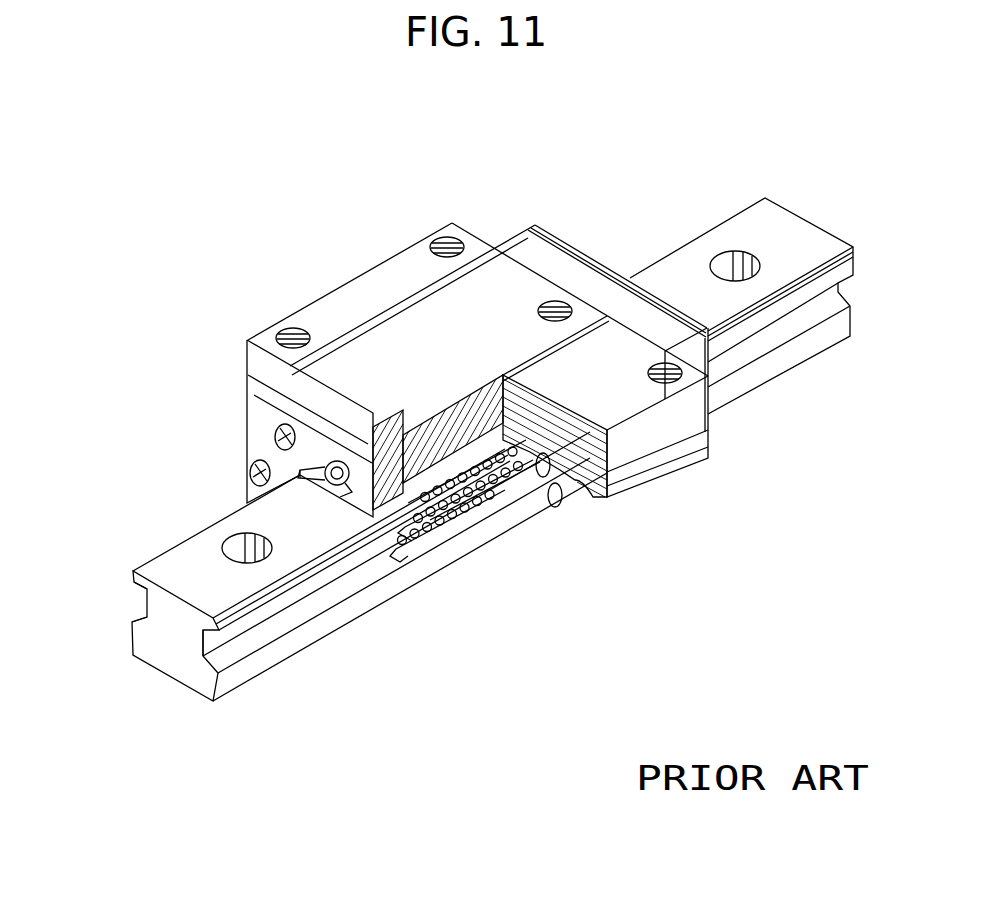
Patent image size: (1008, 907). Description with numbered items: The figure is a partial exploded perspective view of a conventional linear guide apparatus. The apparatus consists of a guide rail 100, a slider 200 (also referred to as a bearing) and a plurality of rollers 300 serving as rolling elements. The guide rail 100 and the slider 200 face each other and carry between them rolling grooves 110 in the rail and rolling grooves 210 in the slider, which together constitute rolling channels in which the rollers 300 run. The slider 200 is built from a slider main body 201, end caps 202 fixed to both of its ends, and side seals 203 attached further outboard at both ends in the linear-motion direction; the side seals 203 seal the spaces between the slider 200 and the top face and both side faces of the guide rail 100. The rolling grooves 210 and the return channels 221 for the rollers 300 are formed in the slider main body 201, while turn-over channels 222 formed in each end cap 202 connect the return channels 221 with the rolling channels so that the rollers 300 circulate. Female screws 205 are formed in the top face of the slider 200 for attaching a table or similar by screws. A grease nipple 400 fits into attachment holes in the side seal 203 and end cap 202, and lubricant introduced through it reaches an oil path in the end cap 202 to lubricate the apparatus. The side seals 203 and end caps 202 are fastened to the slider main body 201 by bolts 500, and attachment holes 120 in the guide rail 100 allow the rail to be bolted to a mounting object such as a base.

The guide rail 100 is at (307, 637).
The rolling grooves 110 is at (130, 617).
The attachment holes 120 is at (230, 533).
The slider 200 is at (372, 265).
The slider main body 201 is at (330, 313).
The end caps 202 is at (283, 378).
The side seals 203 is at (260, 408).
The female screws 205 is at (445, 240).
The rolling grooves 210 is at (503, 540).
The return channels 221 is at (563, 540).
The turn-over channels 222 is at (385, 565).
The rollers 300 is at (477, 552).
The grease nipple 400 is at (338, 505).
The bolts 500 is at (270, 463).